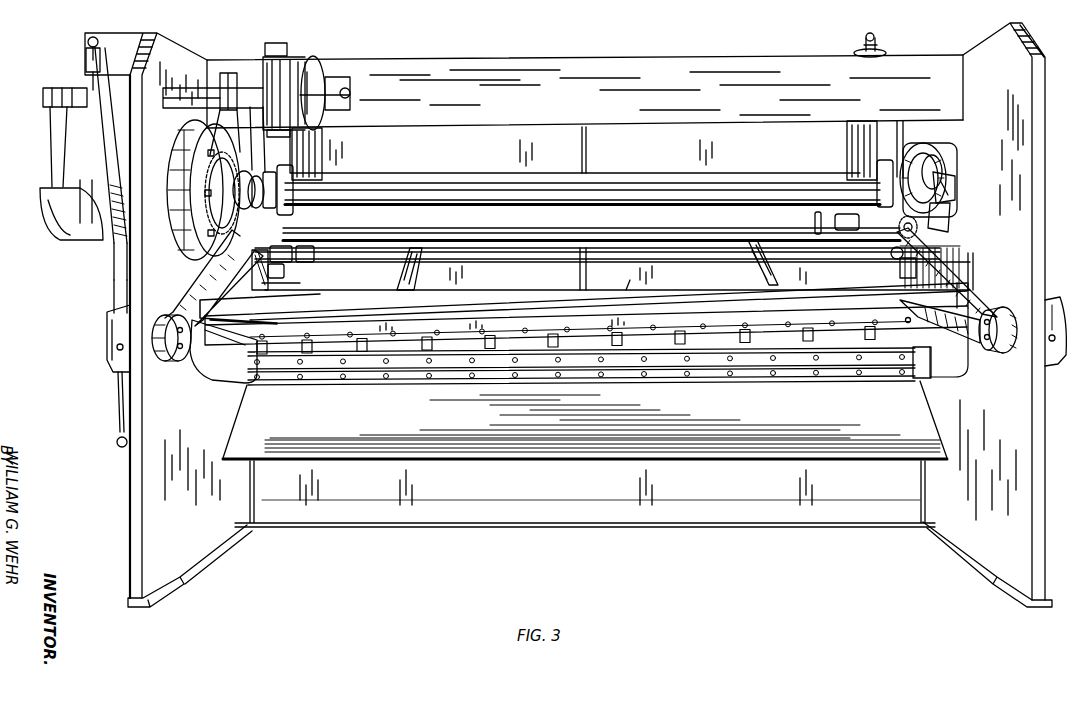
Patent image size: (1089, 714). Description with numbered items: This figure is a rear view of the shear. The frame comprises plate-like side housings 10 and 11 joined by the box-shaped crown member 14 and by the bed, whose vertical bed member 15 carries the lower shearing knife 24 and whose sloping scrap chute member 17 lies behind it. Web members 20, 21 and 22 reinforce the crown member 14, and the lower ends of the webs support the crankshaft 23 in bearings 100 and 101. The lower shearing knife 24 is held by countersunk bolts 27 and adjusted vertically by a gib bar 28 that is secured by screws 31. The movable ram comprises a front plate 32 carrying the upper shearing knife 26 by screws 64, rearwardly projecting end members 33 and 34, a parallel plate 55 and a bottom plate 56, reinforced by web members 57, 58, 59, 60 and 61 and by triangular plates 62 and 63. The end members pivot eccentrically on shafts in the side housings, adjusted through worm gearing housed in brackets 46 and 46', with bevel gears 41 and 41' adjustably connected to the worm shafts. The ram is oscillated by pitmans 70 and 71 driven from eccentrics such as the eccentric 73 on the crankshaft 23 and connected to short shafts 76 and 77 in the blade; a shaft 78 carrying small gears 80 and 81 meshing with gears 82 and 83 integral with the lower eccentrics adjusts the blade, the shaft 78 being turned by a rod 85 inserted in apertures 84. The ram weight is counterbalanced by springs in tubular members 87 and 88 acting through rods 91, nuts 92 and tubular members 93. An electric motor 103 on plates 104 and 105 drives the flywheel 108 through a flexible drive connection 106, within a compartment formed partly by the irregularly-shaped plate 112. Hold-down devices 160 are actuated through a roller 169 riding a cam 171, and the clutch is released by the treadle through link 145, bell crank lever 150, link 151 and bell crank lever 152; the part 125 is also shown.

The side housing 10 is at (154, 494).
The side housing 11 is at (1018, 509).
The crown member 14 is at (590, 66).
The bed member 15 is at (384, 524).
The scrap chute member 17 is at (598, 445).
The web member 20 is at (322, 145).
The web member 21 is at (905, 140).
The web member 22 is at (588, 145).
The crankshaft 23 is at (462, 185).
The lower shearing knife 24 is at (673, 365).
The upper shearing knife 26 is at (593, 318).
The bolts 27 is at (483, 363).
The gib bar 28 is at (627, 375).
The screws 31 is at (400, 375).
The front plate 32 is at (697, 218).
The end member 33 is at (180, 290).
The end member 34 is at (975, 280).
The disk (bevel gear) 41 is at (171, 352).
The bevel gear 41' is at (958, 343).
The bracket 46 is at (100, 338).
The bracket 46' is at (1060, 318).
The plate 55 is at (505, 262).
The bottom plate 56 is at (628, 290).
The web member 57 is at (282, 286).
The web member 58 is at (420, 272).
The web member 59 is at (580, 271).
The web member 60 is at (752, 267).
The web member 61 is at (900, 267).
The triangular plate 62 is at (222, 384).
The triangular plate 63 is at (905, 296).
The screws 64 is at (333, 320).
The pitman 70 is at (238, 262).
The pitman 71 is at (949, 218).
The eccentric 73 is at (935, 150).
The short shaft 76 is at (284, 270).
The short shaft 77 is at (890, 253).
The shaft 78 is at (618, 230).
The small gear 80 is at (200, 270).
The small gear 81 is at (955, 188).
The small gear 82 is at (272, 282).
The small gear 83 is at (920, 233).
The apertures 84 is at (798, 250).
The rod 85 is at (808, 221).
The tubular member 87 is at (278, 170).
The tubular member 88 is at (867, 124).
The rod 91 is at (300, 212).
The nut 92 is at (876, 42).
The tubular member 93 is at (316, 250).
The bearing 100 is at (282, 262).
The bearing 101 is at (878, 182).
The electric motor 103 is at (298, 57).
The plate 104 is at (275, 45).
The plate 105 is at (335, 77).
The flexible drive connection 106 is at (210, 140).
The flywheel 108 is at (177, 213).
The irregularly-shaped plate 112 is at (112, 248).
The brake lever 125 is at (52, 105).
The link 145 is at (100, 38).
The bell crank lever 150 is at (85, 58).
The link 151 is at (113, 298).
The bell crank lever 152 is at (118, 448).
The hold-down devices 160 is at (750, 345).
The roller 169 is at (940, 150).
The cam 171 is at (940, 166).